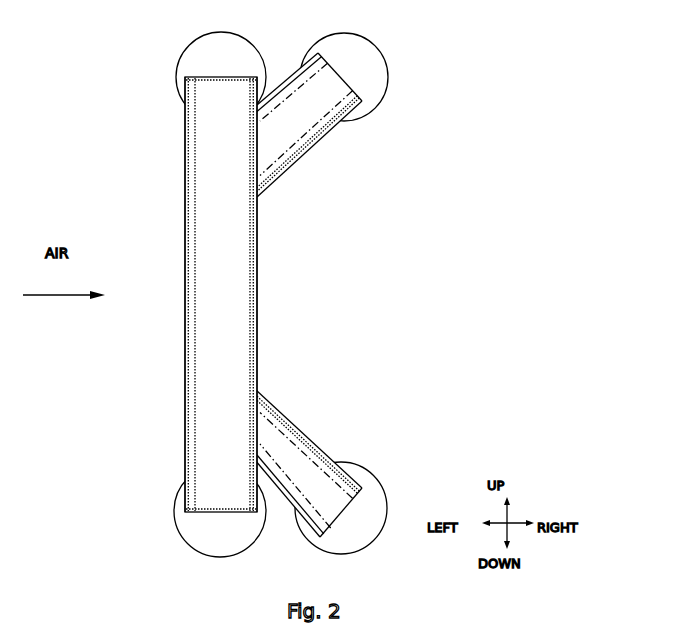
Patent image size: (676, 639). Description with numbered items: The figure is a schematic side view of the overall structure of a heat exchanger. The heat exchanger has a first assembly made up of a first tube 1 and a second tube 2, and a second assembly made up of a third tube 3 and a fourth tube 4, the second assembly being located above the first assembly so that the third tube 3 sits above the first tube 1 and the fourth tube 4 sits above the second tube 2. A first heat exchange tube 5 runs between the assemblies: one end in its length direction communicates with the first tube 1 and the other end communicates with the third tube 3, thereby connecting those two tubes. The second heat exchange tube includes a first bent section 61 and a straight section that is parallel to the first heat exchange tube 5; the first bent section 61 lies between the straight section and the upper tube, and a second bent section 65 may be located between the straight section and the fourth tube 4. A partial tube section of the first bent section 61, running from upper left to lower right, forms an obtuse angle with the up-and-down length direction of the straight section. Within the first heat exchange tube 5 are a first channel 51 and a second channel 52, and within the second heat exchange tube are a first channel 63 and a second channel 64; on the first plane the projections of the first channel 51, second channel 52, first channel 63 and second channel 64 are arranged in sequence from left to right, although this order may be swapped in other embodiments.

The first tube 1 is at (182, 533).
The second tube 2 is at (380, 522).
The third tube 3 is at (177, 68).
The fourth tube 4 is at (377, 97).
The first heat exchange tube 5 is at (214, 294).
The first channel (first heat exchange tube) 51 is at (192, 345).
The second channel (first heat exchange tube) 52 is at (253, 345).
The first bent section 61 is at (308, 438).
The first channel (second heat exchange tube) 63 is at (307, 75).
The second channel (second heat exchange tube) 64 is at (318, 133).
The second bent section 65 is at (277, 177).